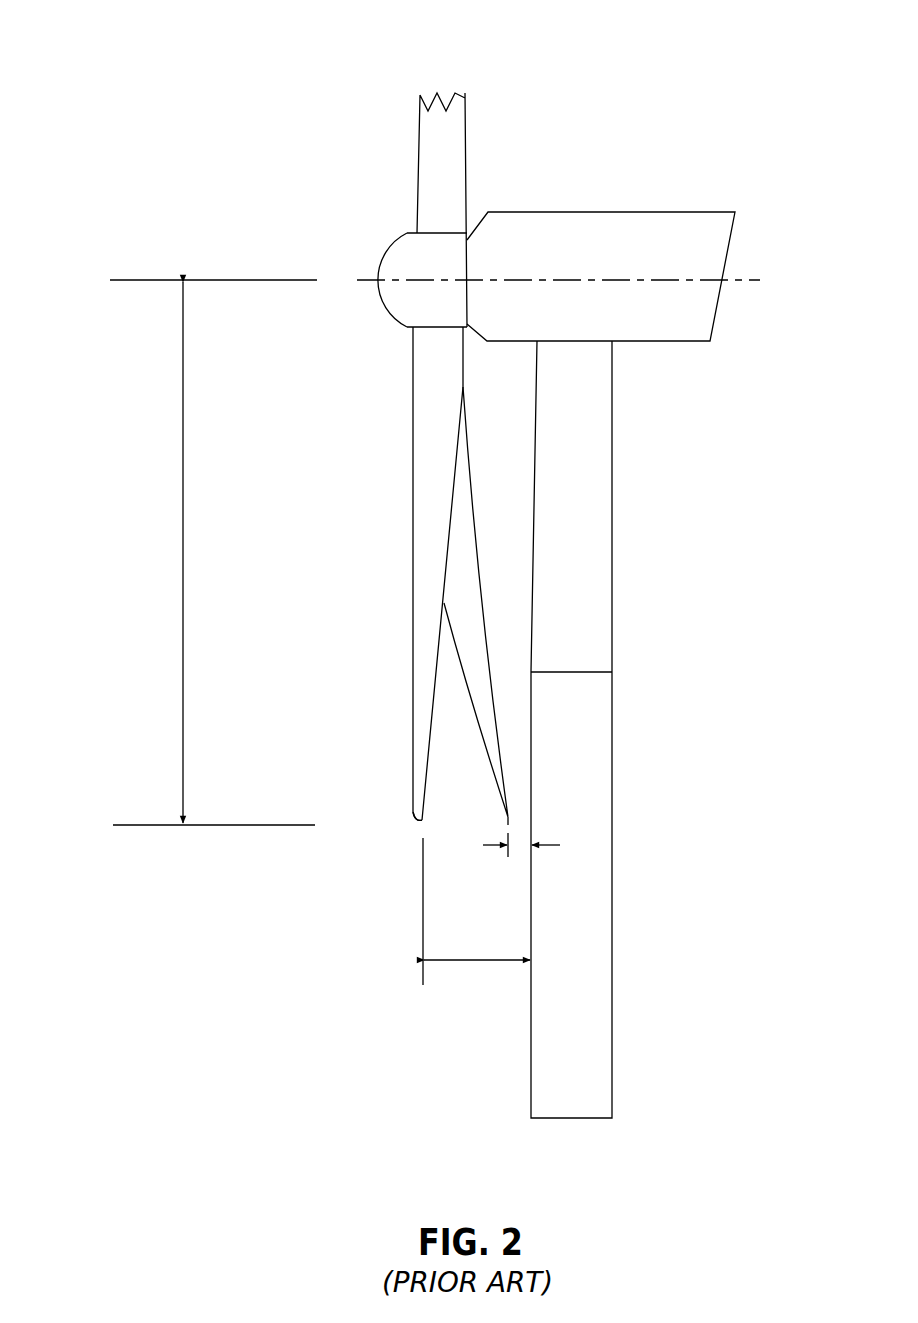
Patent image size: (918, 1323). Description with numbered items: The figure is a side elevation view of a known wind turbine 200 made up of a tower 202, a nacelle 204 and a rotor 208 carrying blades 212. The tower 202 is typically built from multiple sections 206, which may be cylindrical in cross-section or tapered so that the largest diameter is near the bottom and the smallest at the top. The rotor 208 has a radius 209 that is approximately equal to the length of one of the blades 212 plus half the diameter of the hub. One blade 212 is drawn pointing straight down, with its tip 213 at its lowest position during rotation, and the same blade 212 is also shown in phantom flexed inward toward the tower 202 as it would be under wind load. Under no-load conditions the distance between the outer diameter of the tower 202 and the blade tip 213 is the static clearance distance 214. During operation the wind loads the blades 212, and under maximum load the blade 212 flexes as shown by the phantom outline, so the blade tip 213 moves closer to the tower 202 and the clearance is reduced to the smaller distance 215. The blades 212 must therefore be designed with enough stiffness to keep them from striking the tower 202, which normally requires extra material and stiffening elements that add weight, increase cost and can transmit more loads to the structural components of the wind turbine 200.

The wind turbine 200 is at (674, 52).
The tower 202 is at (648, 658).
The nacelle 204 is at (622, 212).
The tower sections 206 is at (612, 490).
The rotor 208 is at (255, 170).
The rotor radius 209 is at (181, 587).
The blade 212 is at (420, 165).
The blade tip 213 is at (415, 825).
The static clearance distance 214 is at (476, 962).
The reduced clearance 215 is at (515, 857).